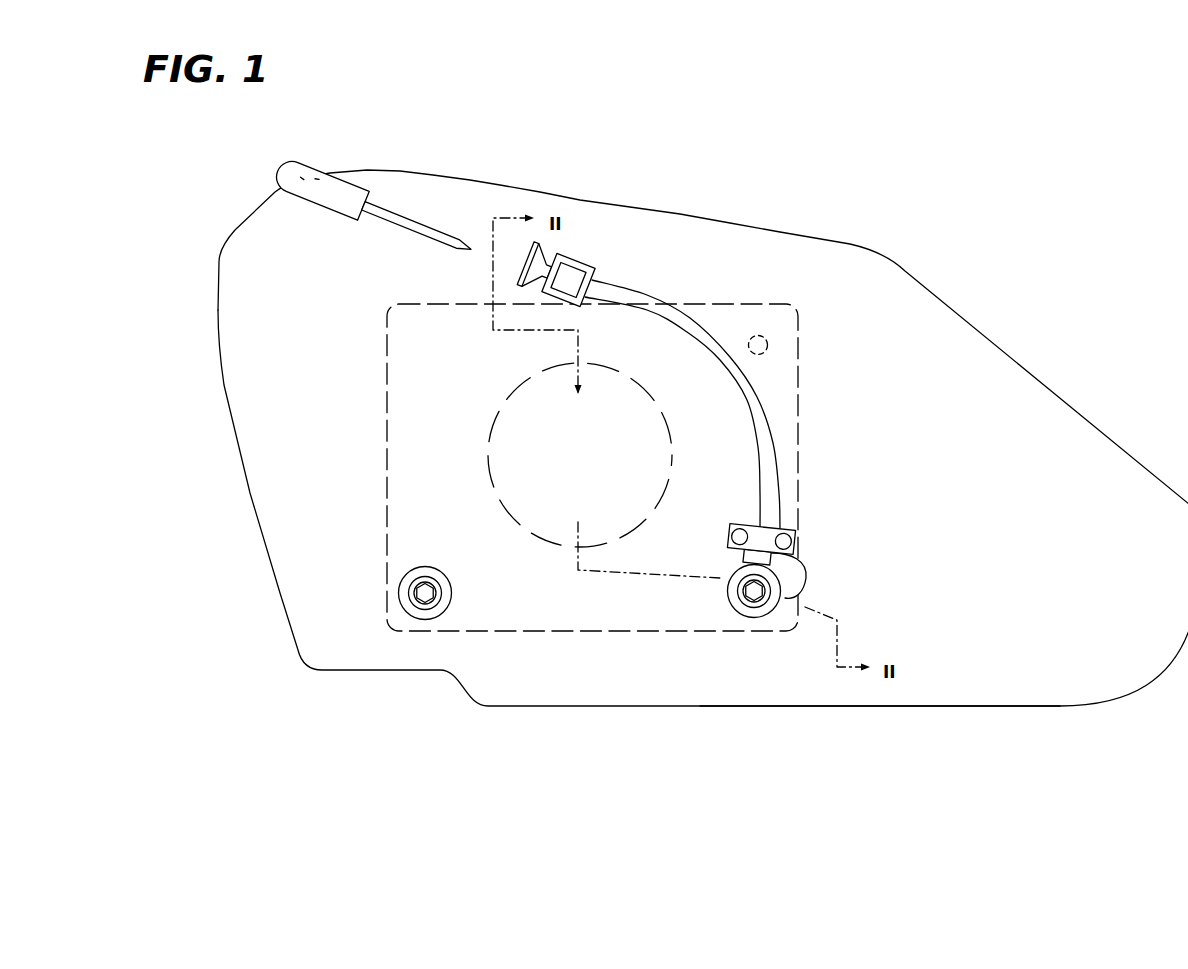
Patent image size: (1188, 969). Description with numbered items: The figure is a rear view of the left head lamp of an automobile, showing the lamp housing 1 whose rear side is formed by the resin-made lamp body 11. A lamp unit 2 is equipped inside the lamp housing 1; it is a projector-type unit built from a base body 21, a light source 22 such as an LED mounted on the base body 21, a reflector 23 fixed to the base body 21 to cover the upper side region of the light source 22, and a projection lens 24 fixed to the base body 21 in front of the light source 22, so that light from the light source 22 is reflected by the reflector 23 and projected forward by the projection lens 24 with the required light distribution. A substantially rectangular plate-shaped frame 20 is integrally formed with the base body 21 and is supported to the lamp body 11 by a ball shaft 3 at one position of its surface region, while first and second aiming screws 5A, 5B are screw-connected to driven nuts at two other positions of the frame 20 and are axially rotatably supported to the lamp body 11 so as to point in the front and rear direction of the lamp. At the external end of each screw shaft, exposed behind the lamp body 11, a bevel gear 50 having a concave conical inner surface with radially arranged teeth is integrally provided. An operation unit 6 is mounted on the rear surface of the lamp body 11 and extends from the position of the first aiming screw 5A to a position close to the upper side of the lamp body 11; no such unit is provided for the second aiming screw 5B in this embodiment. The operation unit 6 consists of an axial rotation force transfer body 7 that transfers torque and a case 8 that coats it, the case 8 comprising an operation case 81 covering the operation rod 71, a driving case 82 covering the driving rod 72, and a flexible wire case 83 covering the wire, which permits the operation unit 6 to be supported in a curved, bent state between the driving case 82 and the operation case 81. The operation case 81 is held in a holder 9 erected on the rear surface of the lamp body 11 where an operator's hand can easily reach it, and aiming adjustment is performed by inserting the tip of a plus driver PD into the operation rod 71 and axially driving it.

The lamp housing 1 is at (972, 330).
The lamp unit 2 is at (563, 443).
The ball shaft 3 is at (768, 344).
The operation unit 6 is at (722, 391).
The axial rotation force transfer body 7 is at (722, 404).
The case 8 is at (722, 404).
The holder 9 is at (526, 294).
The lamp body 11 is at (973, 706).
The frame 20 is at (387, 438).
The base body 21 is at (590, 524).
The light source 22 is at (590, 524).
The reflector 23 is at (590, 524).
The projection lens 24 is at (588, 548).
The bevel gear 50 is at (589, 636).
The first aiming screw 5A is at (756, 626).
The second aiming screw 5B is at (400, 620).
The operation rod 71 is at (516, 267).
The driving rod 72 is at (800, 561).
The operation case 81 is at (536, 290).
The driving case 82 is at (781, 534).
The wire case 83 is at (780, 478).
The plus driver PD is at (347, 192).